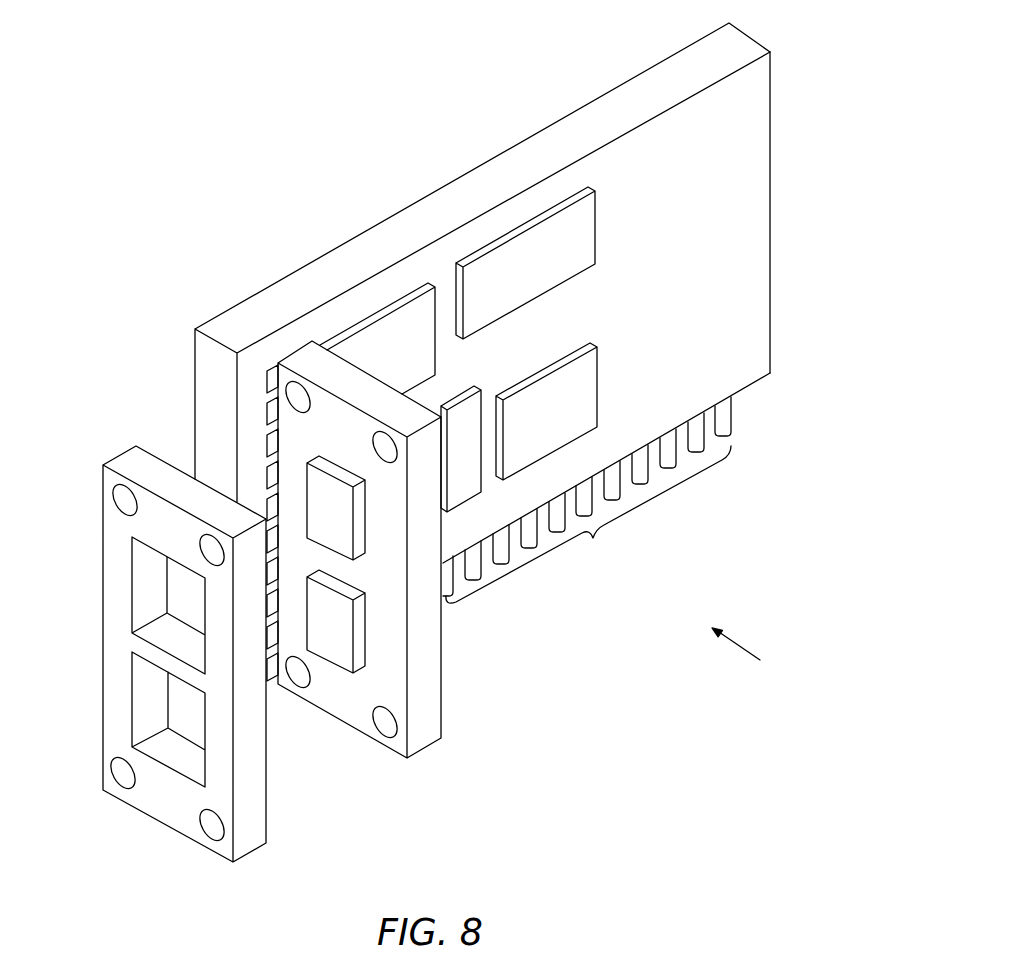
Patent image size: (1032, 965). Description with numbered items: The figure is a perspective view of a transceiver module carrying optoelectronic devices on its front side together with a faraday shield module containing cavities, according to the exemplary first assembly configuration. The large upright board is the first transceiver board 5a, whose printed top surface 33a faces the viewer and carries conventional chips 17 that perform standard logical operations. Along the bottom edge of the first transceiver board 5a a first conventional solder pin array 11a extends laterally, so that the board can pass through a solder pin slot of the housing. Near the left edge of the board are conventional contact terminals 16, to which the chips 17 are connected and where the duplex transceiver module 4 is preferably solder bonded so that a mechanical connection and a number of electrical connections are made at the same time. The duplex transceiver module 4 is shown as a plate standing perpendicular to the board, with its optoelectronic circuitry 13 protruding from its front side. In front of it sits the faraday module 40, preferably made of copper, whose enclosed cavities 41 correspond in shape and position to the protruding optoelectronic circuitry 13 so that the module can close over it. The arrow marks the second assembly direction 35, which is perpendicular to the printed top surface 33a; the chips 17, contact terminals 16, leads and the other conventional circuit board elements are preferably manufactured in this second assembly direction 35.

The first transceiver board 5a is at (540, 147).
The printed top surface 33a is at (752, 312).
The chips 17 is at (583, 229).
The contact terminals 16 is at (272, 380).
The first solder pin array 11a is at (587, 500).
The duplex transceiver module 4 is at (428, 692).
The optoelectronic circuitry 13 is at (342, 648).
The faraday module 40 is at (250, 796).
The enclosed cavities 41 is at (148, 693).
The second assembly direction 35 is at (742, 640).